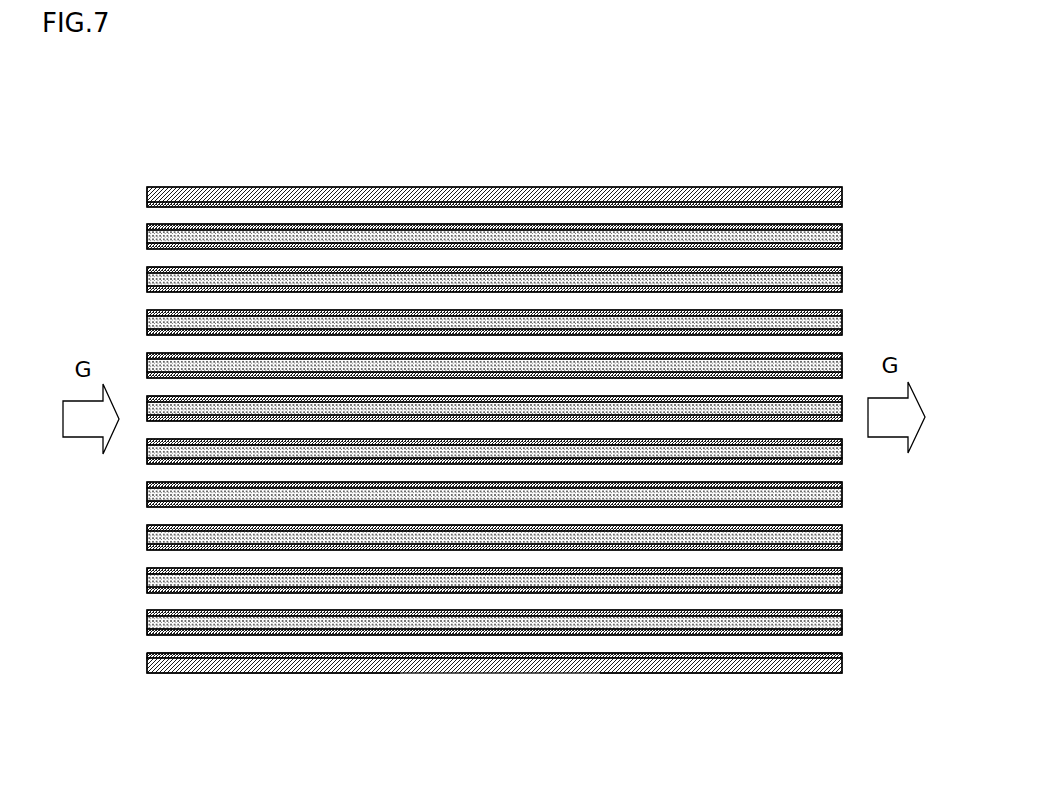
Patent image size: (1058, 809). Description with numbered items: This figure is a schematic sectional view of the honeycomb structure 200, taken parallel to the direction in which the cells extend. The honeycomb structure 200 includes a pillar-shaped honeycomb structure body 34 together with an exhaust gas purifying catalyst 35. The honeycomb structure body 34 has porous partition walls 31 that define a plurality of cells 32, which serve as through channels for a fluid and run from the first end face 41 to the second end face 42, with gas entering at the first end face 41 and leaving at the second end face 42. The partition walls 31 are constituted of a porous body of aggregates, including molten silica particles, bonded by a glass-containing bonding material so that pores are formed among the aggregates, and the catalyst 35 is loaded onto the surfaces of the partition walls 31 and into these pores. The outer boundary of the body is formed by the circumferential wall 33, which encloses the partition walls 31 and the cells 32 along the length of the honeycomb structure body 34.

The honeycomb structure 200 is at (835, 79).
The partition wall 31 is at (531, 238).
The cell 32 is at (165, 302).
The circumferential wall 33 is at (598, 194).
The honeycomb structure body 34 is at (660, 186).
The catalyst 35 is at (392, 228).
The first end face 41 is at (129, 656).
The second end face 42 is at (859, 653).